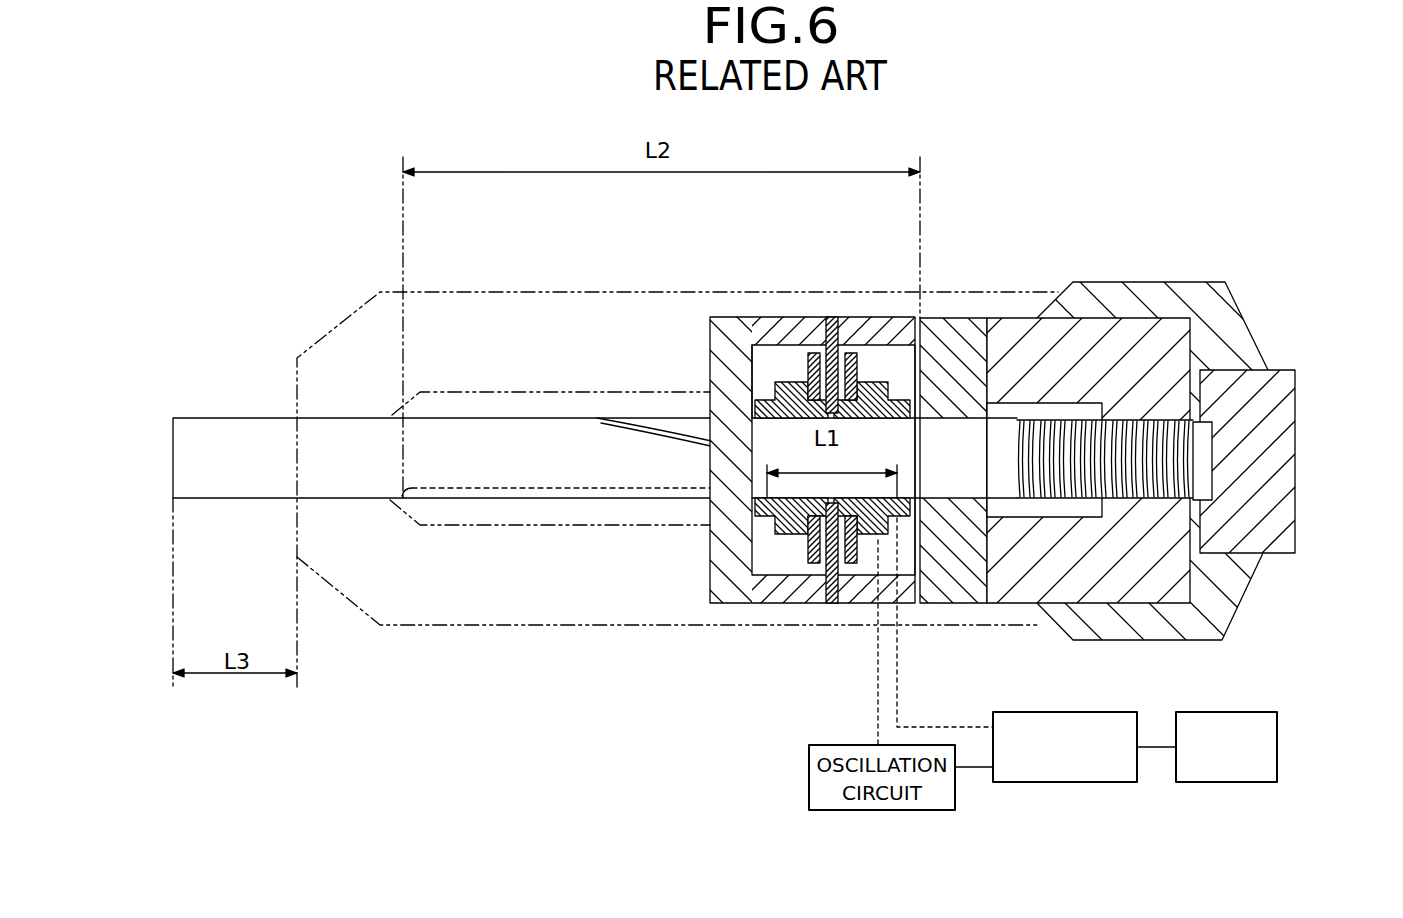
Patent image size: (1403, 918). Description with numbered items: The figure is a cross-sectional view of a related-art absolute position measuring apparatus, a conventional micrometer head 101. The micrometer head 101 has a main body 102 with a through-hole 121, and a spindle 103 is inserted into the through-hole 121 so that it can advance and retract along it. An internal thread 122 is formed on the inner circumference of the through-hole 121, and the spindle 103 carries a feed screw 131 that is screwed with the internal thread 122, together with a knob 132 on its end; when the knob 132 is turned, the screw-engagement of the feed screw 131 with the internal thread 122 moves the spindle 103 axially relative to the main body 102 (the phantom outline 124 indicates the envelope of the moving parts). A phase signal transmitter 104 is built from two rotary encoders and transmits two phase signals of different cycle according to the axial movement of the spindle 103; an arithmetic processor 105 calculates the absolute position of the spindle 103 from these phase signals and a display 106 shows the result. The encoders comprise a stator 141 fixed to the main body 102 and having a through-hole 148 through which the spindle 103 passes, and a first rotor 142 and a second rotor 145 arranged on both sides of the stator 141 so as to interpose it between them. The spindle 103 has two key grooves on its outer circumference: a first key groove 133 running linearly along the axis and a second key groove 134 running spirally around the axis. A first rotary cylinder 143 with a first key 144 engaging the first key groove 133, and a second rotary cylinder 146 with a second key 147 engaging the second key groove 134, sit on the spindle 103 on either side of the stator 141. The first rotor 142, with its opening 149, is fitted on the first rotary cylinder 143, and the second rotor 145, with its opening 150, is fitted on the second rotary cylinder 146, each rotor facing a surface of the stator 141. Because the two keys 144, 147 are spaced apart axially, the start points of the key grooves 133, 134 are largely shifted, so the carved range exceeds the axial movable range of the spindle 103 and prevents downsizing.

The micrometer head 101 is at (1079, 238).
The main body 102 is at (962, 320).
The spindle 103 is at (248, 433).
The phase signal transmitter 104 is at (768, 360).
The arithmetic processor 105 is at (1072, 782).
The display 106 is at (1232, 782).
The through-hole 121 is at (1007, 400).
The internal thread 122 is at (1150, 424).
The phantom outline of bolt head 124 is at (503, 303).
The feed screw 131 is at (1160, 420).
The knob 132 is at (1290, 447).
The first key groove 133 is at (567, 487).
The second key groove 134 is at (640, 432).
The stator 141 is at (832, 316).
The first rotor 142 is at (815, 352).
The first rotary cylinder 143 is at (797, 419).
The first key 144 is at (790, 530).
The second rotor 145 is at (852, 353).
The second rotary cylinder 146 is at (870, 419).
The second key 147 is at (917, 488).
The through-hole 148 is at (808, 540).
The opening 149 is at (779, 376).
The opening 150 is at (888, 398).